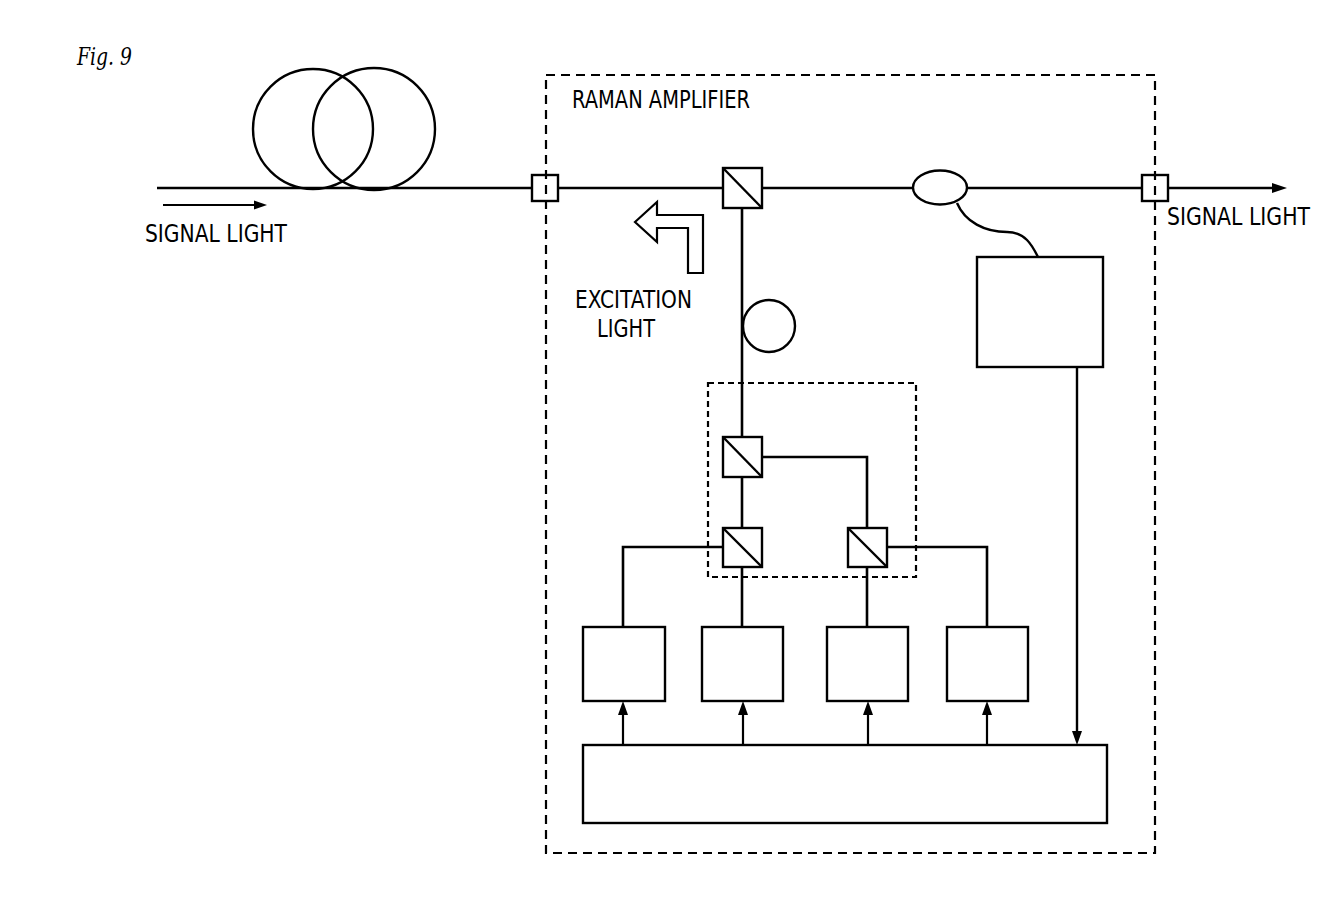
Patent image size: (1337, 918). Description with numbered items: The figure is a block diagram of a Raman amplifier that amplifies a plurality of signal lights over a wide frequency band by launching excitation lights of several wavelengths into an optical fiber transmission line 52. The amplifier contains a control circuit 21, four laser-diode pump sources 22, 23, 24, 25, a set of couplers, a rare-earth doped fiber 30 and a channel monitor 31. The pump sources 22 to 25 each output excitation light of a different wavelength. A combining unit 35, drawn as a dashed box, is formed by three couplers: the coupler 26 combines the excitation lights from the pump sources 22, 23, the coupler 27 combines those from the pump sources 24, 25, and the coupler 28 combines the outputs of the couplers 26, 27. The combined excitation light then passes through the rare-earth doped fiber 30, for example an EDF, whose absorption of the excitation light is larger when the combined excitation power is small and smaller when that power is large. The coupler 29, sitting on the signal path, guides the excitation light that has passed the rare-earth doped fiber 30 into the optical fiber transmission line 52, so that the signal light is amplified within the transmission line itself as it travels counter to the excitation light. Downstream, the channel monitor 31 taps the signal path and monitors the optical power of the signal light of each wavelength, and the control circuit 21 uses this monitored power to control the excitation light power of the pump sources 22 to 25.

The control circuit 21 is at (1093, 745).
The pump source 22 is at (643, 627).
The pump source 23 is at (761, 627).
The pump source 24 is at (883, 627).
The pump source 25 is at (1003, 627).
The coupler 26 is at (751, 528).
The coupler 27 is at (875, 528).
The coupler 28 is at (751, 437).
The coupler 29 is at (743, 168).
The rare-earth doped fiber 30 is at (767, 293).
The channel monitor 31 is at (1067, 257).
The combining unit 35 is at (916, 440).
The optical fiber transmission line 52 is at (283, 190).